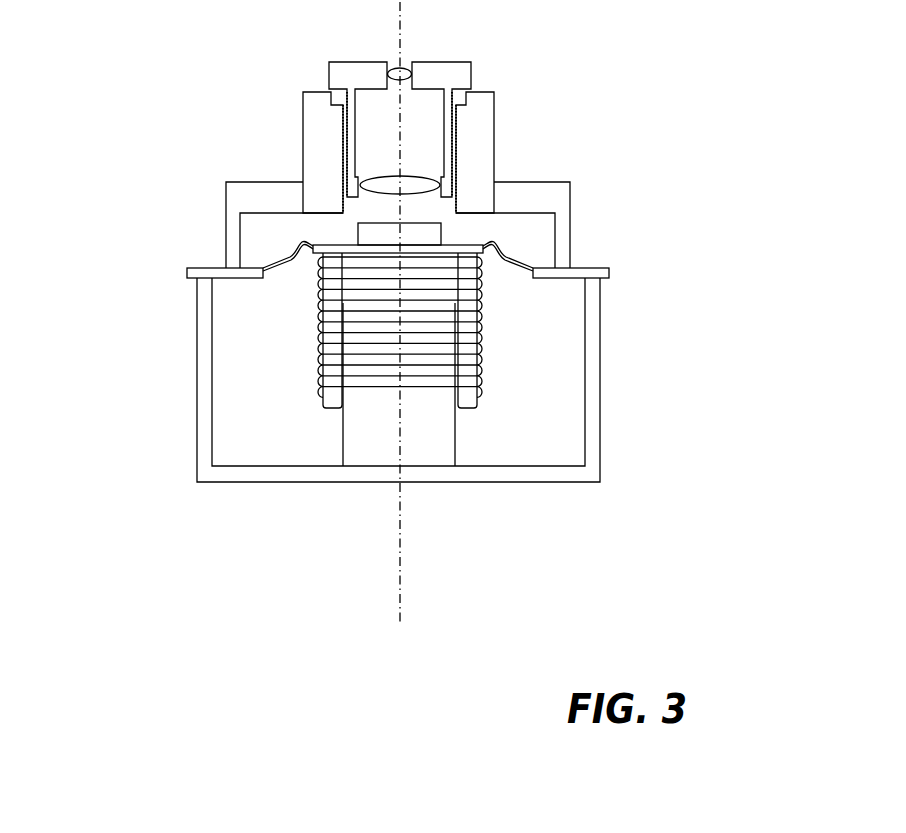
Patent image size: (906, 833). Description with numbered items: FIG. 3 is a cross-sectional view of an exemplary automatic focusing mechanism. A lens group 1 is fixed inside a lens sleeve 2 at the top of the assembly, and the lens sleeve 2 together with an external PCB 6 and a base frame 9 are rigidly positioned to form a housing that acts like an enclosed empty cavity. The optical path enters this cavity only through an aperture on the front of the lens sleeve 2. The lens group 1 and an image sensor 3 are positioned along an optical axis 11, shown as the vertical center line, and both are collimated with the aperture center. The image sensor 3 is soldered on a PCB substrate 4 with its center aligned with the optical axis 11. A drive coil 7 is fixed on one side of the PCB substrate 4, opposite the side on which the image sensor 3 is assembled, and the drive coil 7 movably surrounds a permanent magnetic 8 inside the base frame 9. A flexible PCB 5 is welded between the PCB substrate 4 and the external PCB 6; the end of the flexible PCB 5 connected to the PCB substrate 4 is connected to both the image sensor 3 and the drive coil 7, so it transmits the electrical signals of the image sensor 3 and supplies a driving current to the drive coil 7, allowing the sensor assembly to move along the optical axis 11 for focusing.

The lens group 1 is at (403, 67).
The lens sleeve 2 is at (477, 118).
The image sensor 3 is at (413, 240).
The PCB substrate 4 is at (458, 246).
The flexible PCB 5 is at (290, 262).
The external PCB 6 is at (583, 272).
The drive coil 7 is at (482, 345).
The permanent magnetic 8 is at (440, 445).
The base frame 9 is at (532, 473).
The optical axis 11 is at (403, 575).